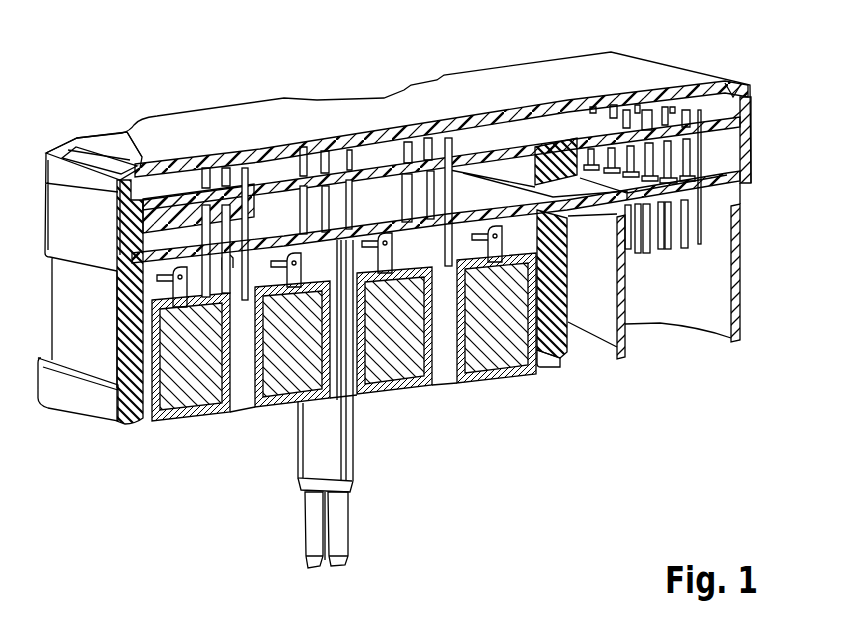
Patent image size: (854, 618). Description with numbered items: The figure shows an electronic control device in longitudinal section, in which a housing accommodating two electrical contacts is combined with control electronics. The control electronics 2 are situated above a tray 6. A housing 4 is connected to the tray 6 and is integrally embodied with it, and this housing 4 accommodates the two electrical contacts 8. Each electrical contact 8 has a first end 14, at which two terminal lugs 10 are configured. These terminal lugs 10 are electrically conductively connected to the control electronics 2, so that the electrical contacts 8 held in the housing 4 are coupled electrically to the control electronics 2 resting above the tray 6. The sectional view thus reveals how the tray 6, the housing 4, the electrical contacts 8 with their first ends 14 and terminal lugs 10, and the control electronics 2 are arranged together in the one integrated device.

The control electronics 2 is at (481, 140).
The housing 4 is at (337, 430).
The tray 6 is at (728, 180).
The electrical contact 8 is at (317, 512).
The terminal lugs 10 is at (300, 153).
The first end 14 is at (313, 222).